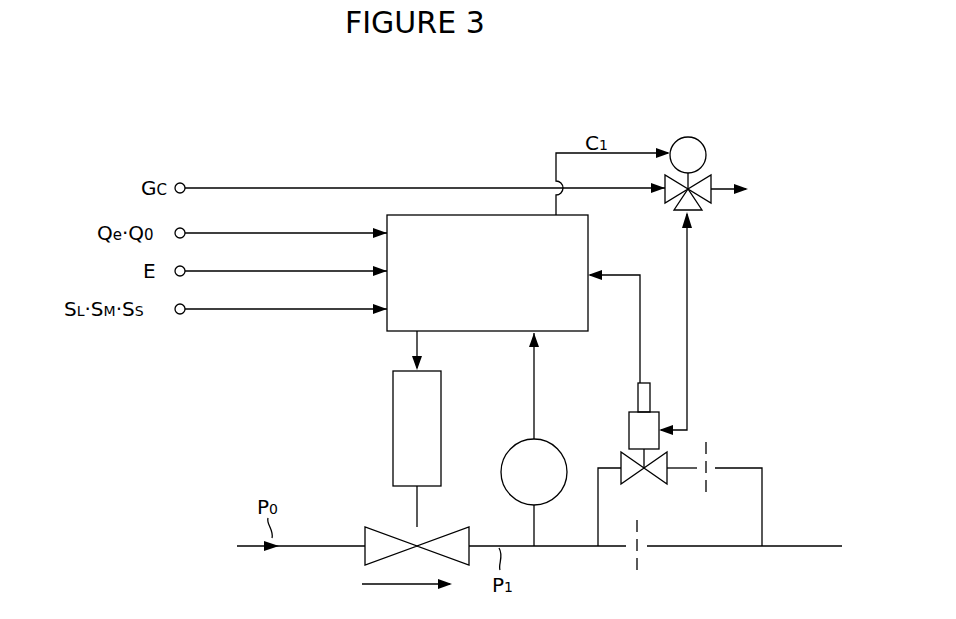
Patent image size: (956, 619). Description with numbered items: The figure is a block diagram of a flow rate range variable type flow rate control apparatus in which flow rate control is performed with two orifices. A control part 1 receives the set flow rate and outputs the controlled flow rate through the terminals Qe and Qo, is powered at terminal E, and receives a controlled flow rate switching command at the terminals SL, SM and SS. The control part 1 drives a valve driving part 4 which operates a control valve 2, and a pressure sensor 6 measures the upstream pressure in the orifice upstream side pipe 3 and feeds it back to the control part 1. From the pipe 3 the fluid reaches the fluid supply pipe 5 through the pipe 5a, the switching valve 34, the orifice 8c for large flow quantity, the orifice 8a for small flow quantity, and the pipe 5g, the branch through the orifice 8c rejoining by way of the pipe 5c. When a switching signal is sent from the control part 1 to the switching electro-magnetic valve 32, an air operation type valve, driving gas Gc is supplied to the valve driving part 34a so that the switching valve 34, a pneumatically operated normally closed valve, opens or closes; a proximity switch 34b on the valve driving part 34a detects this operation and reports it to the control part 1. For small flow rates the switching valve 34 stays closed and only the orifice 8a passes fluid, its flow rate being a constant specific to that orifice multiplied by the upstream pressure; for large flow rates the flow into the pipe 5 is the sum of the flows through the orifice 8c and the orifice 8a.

The control part 1 is at (392, 333).
The control valve 2 is at (366, 530).
The orifice upstream side (primary side) pipe 3 is at (560, 549).
The valve driving part 4 is at (393, 436).
The fluid supply pipe 5 is at (832, 546).
The pipe 5a is at (597, 525).
The pipe 5c is at (764, 521).
The pipe 5g is at (729, 549).
The pressure sensor 6 is at (501, 470).
The orifice for small flow quantity 8a is at (640, 551).
The orifice for large flow quantity 8c is at (708, 466).
The switching electro-magnetic valve 32 is at (706, 150).
The switching valve 34 is at (645, 474).
The valve driving part 34a is at (642, 430).
The proximity switch 34b is at (642, 396).